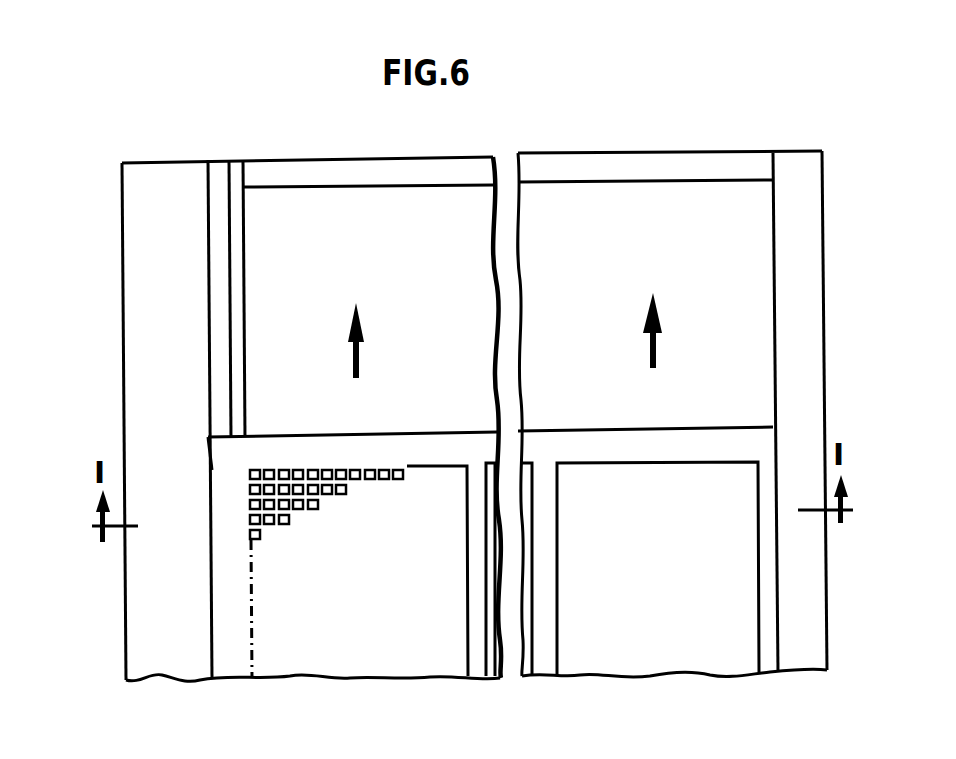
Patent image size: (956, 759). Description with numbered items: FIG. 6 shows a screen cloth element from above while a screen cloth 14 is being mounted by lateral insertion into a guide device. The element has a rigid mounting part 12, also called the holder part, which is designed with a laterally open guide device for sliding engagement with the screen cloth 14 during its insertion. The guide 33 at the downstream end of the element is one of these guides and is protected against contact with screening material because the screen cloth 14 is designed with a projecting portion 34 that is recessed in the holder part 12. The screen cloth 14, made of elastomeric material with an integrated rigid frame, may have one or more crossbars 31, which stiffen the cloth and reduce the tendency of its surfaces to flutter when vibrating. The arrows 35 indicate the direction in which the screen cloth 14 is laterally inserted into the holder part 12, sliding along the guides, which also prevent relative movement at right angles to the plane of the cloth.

The mounting part 12 is at (400, 186).
The screen cloth 14 is at (430, 492).
The crossbar 31 is at (473, 601).
The guide 33 is at (222, 318).
The projecting portion 34 is at (226, 463).
The arrows 35 is at (360, 351).